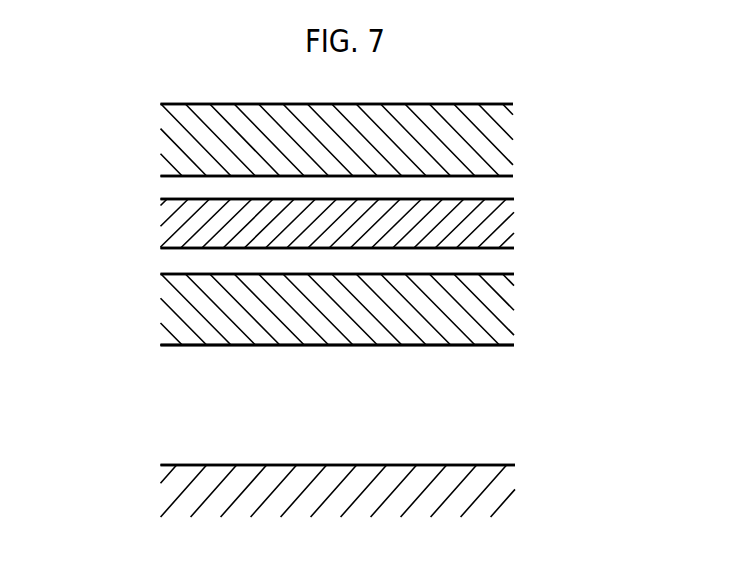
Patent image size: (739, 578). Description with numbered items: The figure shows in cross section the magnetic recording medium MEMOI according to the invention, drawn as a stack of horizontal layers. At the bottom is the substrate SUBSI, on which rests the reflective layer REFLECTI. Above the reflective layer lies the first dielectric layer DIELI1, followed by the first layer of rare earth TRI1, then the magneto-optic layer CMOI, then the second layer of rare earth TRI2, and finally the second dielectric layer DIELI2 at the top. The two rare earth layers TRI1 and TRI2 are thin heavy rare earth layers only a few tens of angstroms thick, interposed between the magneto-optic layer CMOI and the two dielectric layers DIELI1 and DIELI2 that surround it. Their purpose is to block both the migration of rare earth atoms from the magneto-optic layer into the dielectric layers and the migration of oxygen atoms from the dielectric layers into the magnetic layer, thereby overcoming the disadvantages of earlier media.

The magnetic recording medium MEMOI is at (113, 228).
The second dielectric layer DIELI2 is at (521, 137).
The second layer of rare earth TRI2 is at (521, 188).
The magneto-optic layer CMOI is at (521, 226).
The first layer of rare earth TRI1 is at (521, 264).
The first dielectric layer DIELI1 is at (521, 312).
The reflective layer REFLECTI is at (519, 407).
The substrate SUBSI is at (520, 491).